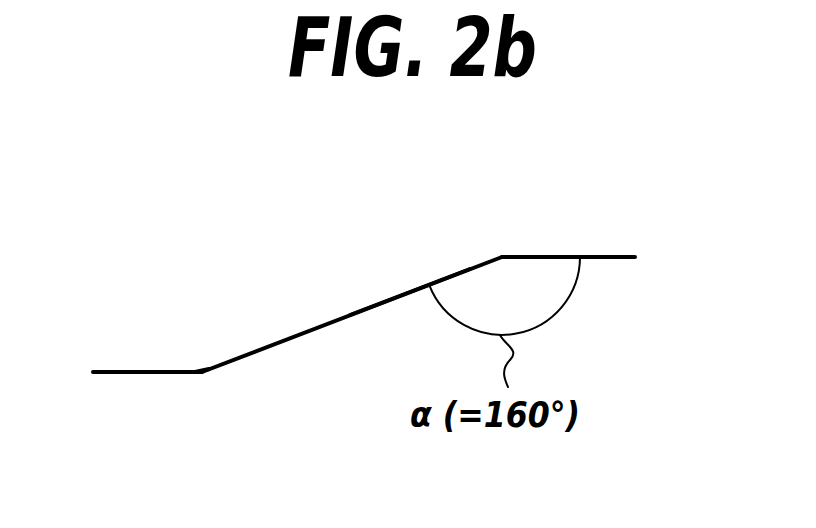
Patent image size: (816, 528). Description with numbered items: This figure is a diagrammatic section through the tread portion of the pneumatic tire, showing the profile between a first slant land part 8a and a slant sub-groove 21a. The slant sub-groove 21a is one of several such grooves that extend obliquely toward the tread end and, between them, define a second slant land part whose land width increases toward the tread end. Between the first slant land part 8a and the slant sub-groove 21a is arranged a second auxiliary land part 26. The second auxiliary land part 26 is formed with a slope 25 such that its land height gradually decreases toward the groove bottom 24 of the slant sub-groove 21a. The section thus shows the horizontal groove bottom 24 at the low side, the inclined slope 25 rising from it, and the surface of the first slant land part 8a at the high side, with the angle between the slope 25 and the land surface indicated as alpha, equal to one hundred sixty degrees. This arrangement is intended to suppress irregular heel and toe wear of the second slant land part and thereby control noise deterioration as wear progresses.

The slant sub-groove 21a is at (155, 370).
The groove bottom 24 is at (175, 370).
The second auxiliary land part 26 is at (360, 311).
The slope 25 is at (407, 293).
The first slant land part 8a is at (605, 257).